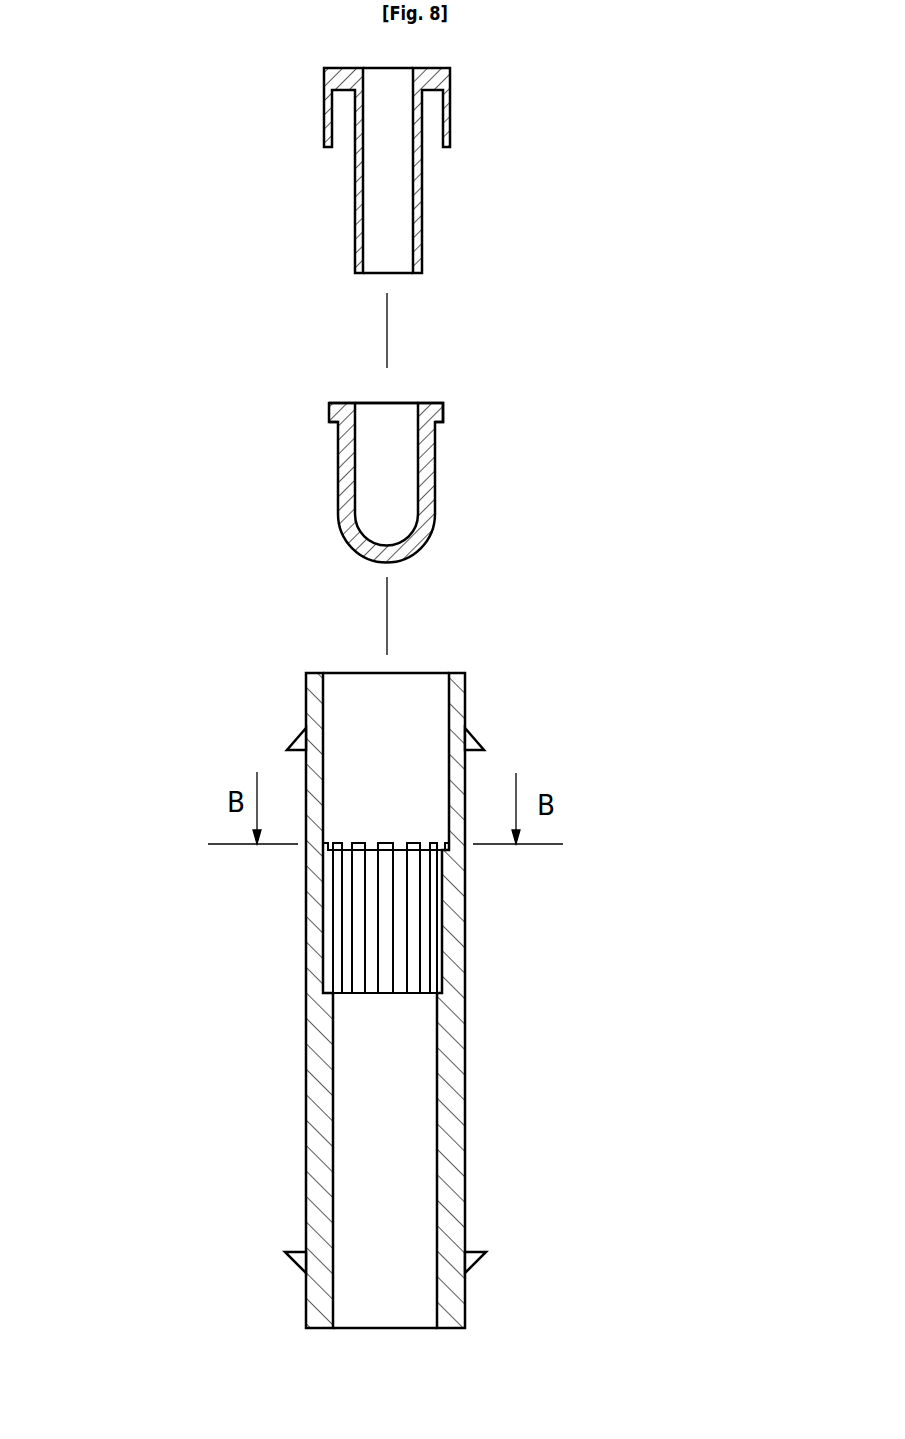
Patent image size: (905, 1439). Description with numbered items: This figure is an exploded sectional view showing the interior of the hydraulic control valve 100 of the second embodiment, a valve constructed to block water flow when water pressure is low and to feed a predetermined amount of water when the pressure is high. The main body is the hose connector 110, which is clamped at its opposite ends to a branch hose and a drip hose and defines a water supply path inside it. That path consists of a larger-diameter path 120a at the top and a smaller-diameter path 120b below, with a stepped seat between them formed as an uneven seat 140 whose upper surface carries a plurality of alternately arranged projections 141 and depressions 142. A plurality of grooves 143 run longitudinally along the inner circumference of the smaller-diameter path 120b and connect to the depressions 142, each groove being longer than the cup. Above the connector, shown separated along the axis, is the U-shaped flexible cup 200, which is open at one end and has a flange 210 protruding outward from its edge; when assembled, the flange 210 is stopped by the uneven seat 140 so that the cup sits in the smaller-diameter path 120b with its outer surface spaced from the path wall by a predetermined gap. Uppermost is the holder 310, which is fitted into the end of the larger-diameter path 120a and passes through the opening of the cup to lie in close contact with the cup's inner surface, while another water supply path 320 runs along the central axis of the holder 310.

The hydraulic control valve 100 is at (192, 660).
The hose connector 110 is at (320, 1030).
The larger-diameter path 120a is at (393, 708).
The smaller-diameter path 120b is at (367, 1142).
The uneven seat 140 is at (386, 855).
The projections 141 is at (358, 843).
The depressions 142 is at (424, 843).
The grooves 143 is at (425, 978).
The U-shaped flexible cup 200 is at (435, 470).
The flange 210 is at (443, 406).
The holder 310 is at (450, 72).
The water supply path 320 is at (392, 195).